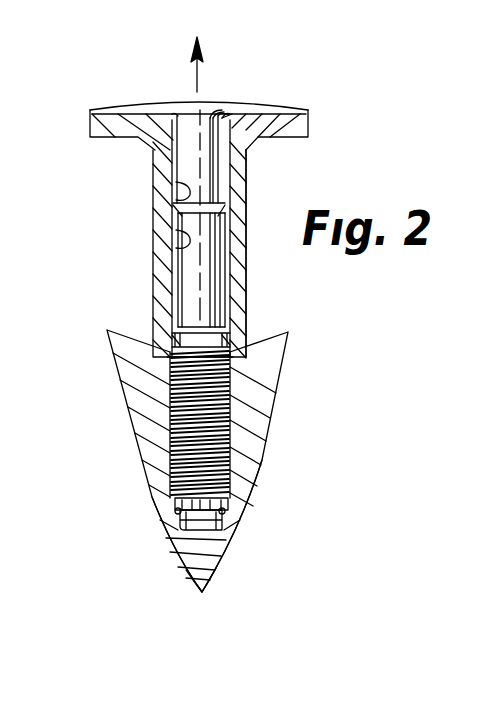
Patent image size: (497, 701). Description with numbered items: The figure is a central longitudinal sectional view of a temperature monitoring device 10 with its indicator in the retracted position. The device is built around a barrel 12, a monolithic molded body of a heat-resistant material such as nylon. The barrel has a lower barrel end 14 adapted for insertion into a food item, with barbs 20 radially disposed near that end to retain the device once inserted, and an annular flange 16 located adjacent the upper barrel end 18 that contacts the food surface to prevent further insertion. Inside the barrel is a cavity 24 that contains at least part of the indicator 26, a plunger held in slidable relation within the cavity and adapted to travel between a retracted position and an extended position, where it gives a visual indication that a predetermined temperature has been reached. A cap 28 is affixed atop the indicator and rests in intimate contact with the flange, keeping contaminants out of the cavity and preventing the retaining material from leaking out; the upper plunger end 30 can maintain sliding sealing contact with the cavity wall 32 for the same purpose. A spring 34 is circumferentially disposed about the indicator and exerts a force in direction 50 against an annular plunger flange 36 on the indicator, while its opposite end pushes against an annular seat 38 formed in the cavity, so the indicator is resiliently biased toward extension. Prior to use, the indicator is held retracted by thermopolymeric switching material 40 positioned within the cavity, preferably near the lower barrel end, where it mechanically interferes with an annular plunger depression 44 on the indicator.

The temperature monitoring device 10 is at (362, 152).
The barrel 12 is at (152, 308).
The lower barrel end 14 is at (183, 540).
The annular flange 16 is at (90, 116).
The upper barrel end 18 is at (252, 167).
The barbs 20 is at (258, 372).
The cavity 24 is at (178, 243).
The indicator 26 is at (188, 255).
The cap 28 is at (263, 104).
The upper plunger end 30 is at (165, 160).
The cavity wall 32 is at (176, 200).
The spring 34 is at (227, 420).
The annular plunger flange 36 is at (208, 323).
The annular seat 38 is at (205, 494).
The thermopolymeric switching material 40 is at (232, 522).
The annular plunger depression 44 is at (200, 561).
The direction 50 is at (197, 72).